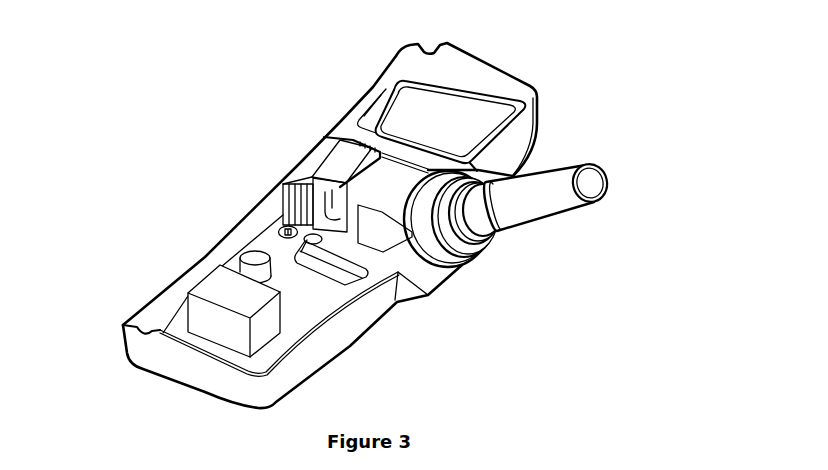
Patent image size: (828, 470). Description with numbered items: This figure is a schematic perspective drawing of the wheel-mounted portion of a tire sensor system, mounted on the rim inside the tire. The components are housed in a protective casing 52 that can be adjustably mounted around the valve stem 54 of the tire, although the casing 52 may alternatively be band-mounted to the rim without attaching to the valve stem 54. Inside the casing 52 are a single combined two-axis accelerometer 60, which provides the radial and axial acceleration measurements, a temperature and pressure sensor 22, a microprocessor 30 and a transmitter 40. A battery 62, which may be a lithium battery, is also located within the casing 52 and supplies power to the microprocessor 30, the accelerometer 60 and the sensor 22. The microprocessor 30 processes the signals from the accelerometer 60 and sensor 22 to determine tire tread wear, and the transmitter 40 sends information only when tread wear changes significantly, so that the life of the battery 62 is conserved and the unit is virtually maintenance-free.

The temperature and pressure sensor 22 is at (251, 256).
The microprocessor 30 is at (347, 277).
The transmitter 40 is at (287, 228).
The casing 52 is at (542, 123).
The valve stem 54 is at (598, 160).
The two-axis accelerometer 60 is at (197, 313).
The battery 62 is at (423, 88).